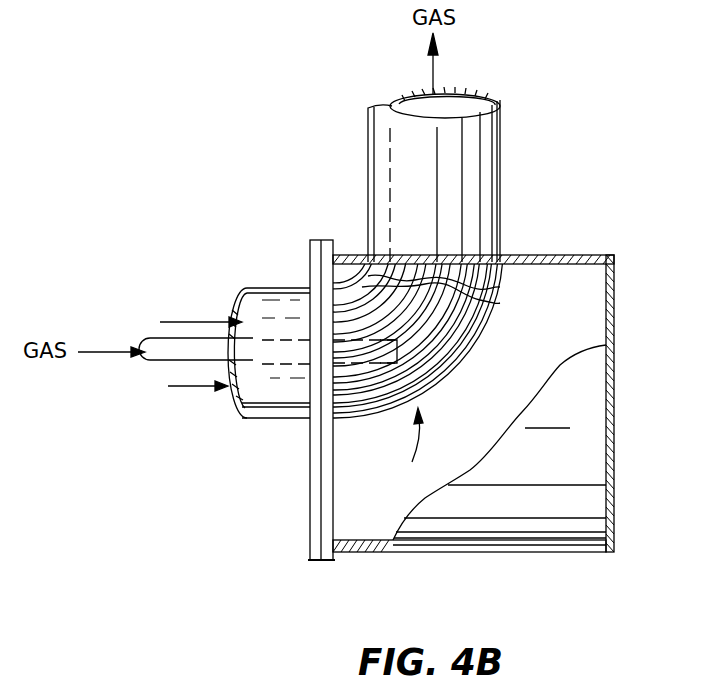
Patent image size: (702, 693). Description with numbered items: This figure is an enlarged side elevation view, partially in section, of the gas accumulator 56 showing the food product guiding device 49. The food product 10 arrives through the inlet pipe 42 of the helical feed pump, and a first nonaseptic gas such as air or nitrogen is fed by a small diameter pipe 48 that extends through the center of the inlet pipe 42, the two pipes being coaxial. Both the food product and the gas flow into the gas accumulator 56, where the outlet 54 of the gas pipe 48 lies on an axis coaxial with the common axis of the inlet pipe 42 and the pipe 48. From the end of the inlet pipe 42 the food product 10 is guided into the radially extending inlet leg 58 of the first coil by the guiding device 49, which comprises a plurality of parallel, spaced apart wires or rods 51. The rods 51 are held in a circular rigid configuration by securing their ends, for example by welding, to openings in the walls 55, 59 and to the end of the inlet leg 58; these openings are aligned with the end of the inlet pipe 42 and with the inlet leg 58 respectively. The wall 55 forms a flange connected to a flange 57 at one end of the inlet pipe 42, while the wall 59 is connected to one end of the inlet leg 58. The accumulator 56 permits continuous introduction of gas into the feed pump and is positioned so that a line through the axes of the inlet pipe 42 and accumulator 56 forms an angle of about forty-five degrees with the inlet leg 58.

The food product 10 is at (437, 70).
The inlet pipe 42 is at (275, 420).
The small diameter pipe 48 is at (160, 366).
The guiding device 49 is at (401, 446).
The wires or rods 51 is at (380, 264).
The outlet 54 is at (380, 364).
The wall 55 is at (325, 562).
The gas accumulator 56 is at (570, 528).
The flange 57 is at (308, 497).
The inlet leg 58 is at (502, 163).
The wall 59 is at (557, 257).